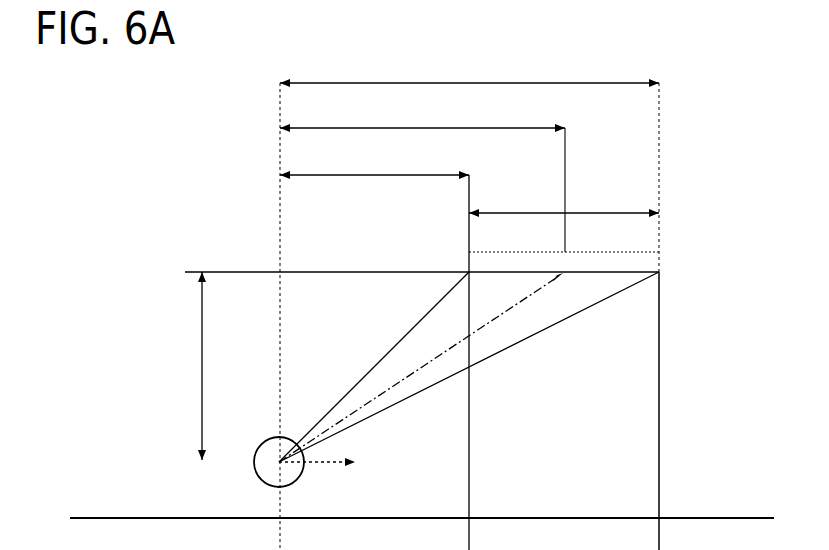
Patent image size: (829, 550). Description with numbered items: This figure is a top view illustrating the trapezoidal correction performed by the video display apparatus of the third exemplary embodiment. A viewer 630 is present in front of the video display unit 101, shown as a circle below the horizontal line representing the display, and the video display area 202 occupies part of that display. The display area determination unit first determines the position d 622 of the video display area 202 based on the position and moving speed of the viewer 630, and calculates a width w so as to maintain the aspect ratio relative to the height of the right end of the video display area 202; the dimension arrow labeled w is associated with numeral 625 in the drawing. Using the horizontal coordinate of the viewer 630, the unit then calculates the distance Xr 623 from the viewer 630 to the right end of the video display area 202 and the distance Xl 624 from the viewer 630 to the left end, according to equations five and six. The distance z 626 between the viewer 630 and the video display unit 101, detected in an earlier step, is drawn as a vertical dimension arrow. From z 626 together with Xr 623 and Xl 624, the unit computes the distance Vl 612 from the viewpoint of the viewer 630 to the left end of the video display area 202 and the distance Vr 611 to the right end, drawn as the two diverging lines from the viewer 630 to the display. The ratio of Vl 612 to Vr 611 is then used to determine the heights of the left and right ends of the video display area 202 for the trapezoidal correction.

The video display unit 101 is at (662, 257).
The video display area 202 is at (616, 274).
The distance Vr 611 is at (507, 350).
The distance Vl 612 is at (378, 366).
The position d 622 is at (530, 129).
The distance Xr 623 is at (333, 80).
The distance Xl 624 is at (335, 158).
The width w of region 625 is at (588, 212).
The distance z 626 is at (200, 325).
The viewer 630 is at (254, 476).